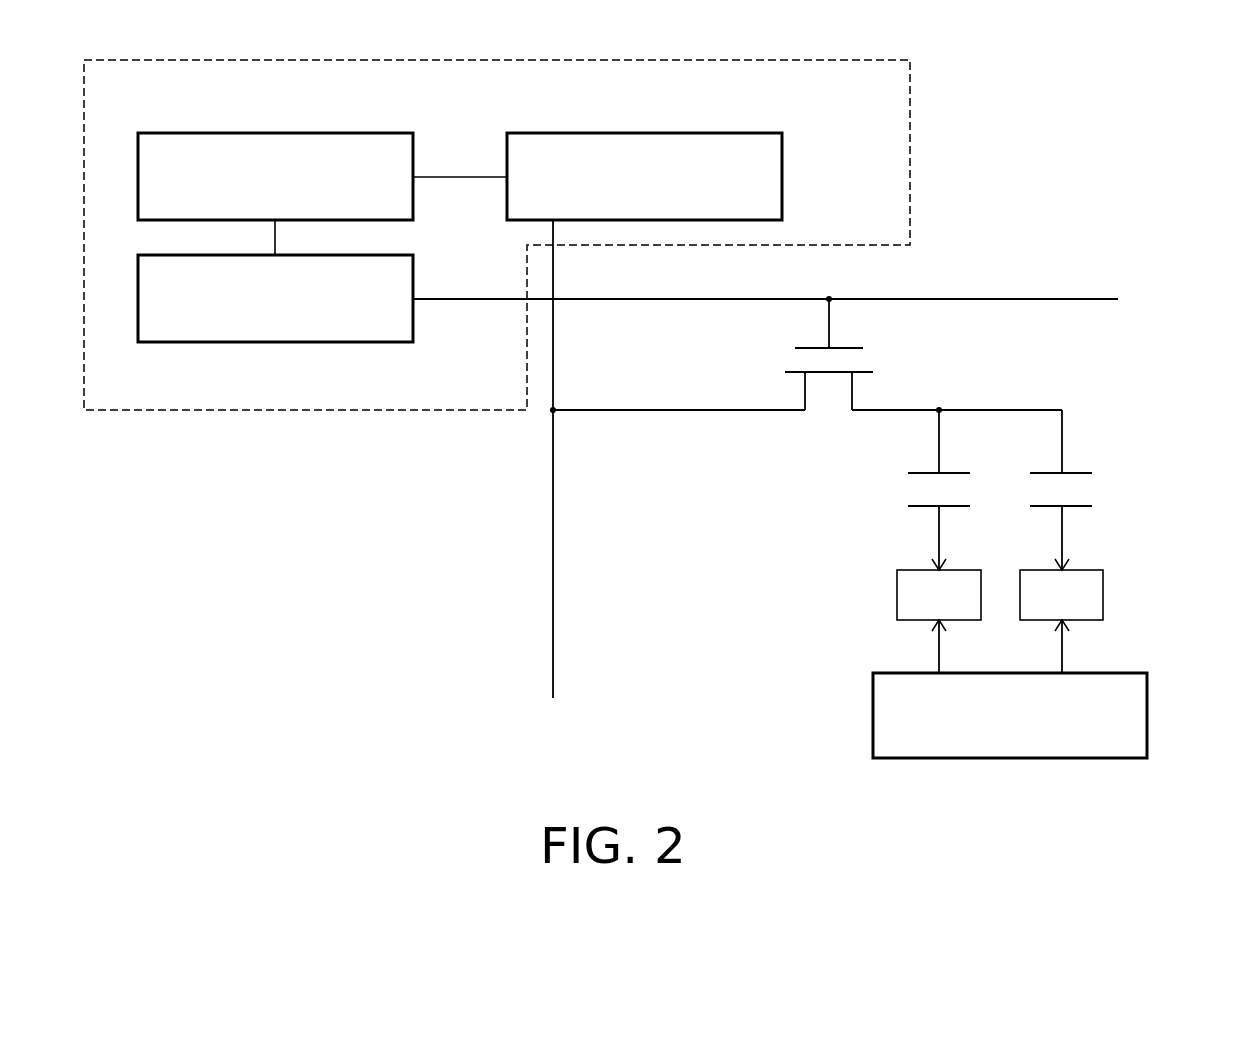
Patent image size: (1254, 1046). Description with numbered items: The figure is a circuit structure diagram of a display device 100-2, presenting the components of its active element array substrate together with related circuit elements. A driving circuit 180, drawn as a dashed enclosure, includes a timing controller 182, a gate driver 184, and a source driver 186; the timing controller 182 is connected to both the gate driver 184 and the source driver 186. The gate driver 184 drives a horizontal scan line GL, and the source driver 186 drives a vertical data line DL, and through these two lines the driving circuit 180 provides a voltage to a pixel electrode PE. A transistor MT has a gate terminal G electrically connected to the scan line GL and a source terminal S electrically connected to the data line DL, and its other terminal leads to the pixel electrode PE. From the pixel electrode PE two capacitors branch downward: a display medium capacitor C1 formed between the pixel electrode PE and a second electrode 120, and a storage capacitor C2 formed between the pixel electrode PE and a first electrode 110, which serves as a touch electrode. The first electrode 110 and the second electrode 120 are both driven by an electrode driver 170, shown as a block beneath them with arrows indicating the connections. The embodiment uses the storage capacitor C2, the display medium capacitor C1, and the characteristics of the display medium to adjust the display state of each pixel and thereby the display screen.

The display device 100-2 is at (799, 756).
The driving circuit 180 is at (910, 142).
The timing controller 182 is at (277, 133).
The gate driver 184 is at (275, 342).
The source driver 186 is at (645, 133).
The electrode driver 170 is at (1147, 717).
The first electrode 110 is at (939, 595).
The second electrode 120 is at (1061, 595).
The data line DL is at (553, 342).
The scan line GL is at (1035, 299).
The gate terminal G is at (829, 299).
The transistor MT is at (867, 370).
The source terminal S is at (793, 411).
The pixel electrode PE is at (939, 410).
The display medium capacitor C1 is at (951, 472).
The storage capacitor C2 is at (1075, 472).